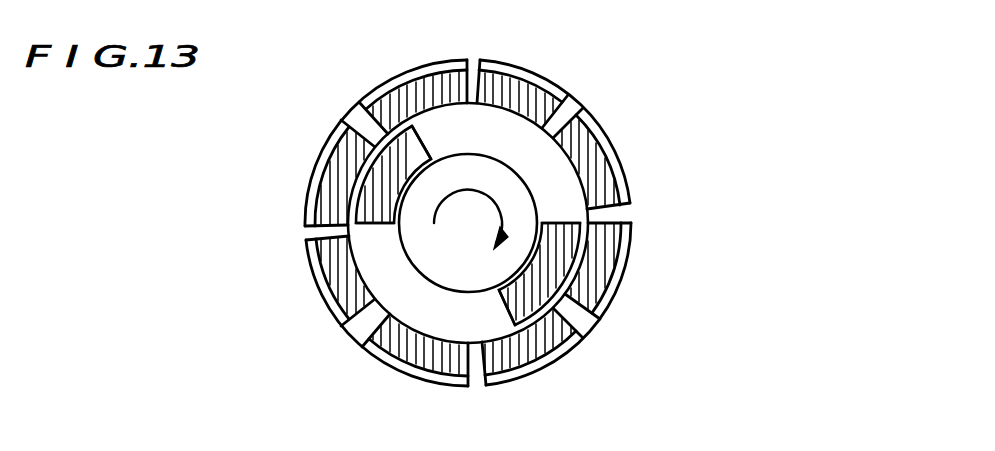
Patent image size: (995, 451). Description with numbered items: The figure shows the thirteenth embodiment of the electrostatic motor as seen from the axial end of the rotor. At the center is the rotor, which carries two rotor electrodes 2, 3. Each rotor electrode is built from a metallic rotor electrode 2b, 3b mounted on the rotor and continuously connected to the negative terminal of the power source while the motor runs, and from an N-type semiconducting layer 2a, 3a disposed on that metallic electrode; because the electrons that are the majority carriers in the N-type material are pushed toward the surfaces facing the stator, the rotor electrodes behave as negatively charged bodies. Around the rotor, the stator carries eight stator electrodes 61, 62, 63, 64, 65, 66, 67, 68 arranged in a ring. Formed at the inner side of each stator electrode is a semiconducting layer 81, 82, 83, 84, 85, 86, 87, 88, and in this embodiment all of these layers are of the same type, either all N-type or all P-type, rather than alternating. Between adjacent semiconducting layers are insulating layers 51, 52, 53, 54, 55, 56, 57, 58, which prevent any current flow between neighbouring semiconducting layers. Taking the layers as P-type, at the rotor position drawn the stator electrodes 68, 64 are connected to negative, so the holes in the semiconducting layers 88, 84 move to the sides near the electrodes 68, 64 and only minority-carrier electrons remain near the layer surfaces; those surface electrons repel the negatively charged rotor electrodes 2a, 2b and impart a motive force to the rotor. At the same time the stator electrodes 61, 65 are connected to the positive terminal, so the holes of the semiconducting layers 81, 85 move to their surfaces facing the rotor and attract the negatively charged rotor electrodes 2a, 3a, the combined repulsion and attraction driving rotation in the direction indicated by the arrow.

The rotor electrode 2 is at (352, 210).
The N-type semiconducting layer 2a is at (363, 226).
The metallic rotor electrode 2b is at (432, 152).
The rotor electrode 3 is at (585, 298).
The N-type semiconducting layer 3a is at (505, 310).
The metallic rotor electrode 3b is at (556, 221).
The insulating layer 51 is at (471, 62).
The insulating layer 52 is at (565, 113).
The insulating layer 53 is at (636, 215).
The insulating layer 54 is at (580, 330).
The insulating layer 55 is at (476, 388).
The insulating layer 56 is at (366, 338).
The insulating layer 57 is at (328, 231).
The insulating layer 58 is at (360, 118).
The stator electrode 61 is at (420, 66).
The stator electrode 62 is at (540, 66).
The stator electrode 63 is at (612, 160).
The stator electrode 64 is at (615, 285).
The stator electrode 65 is at (545, 372).
The stator electrode 66 is at (398, 372).
The stator electrode 67 is at (324, 272).
The stator electrode 68 is at (340, 178).
The semiconducting layer 81 is at (394, 90).
The semiconducting layer 82 is at (505, 80).
The semiconducting layer 83 is at (600, 130).
The semiconducting layer 84 is at (622, 256).
The semiconducting layer 85 is at (512, 378).
The semiconducting layer 86 is at (430, 376).
The semiconducting layer 87 is at (344, 318).
The semiconducting layer 88 is at (334, 146).